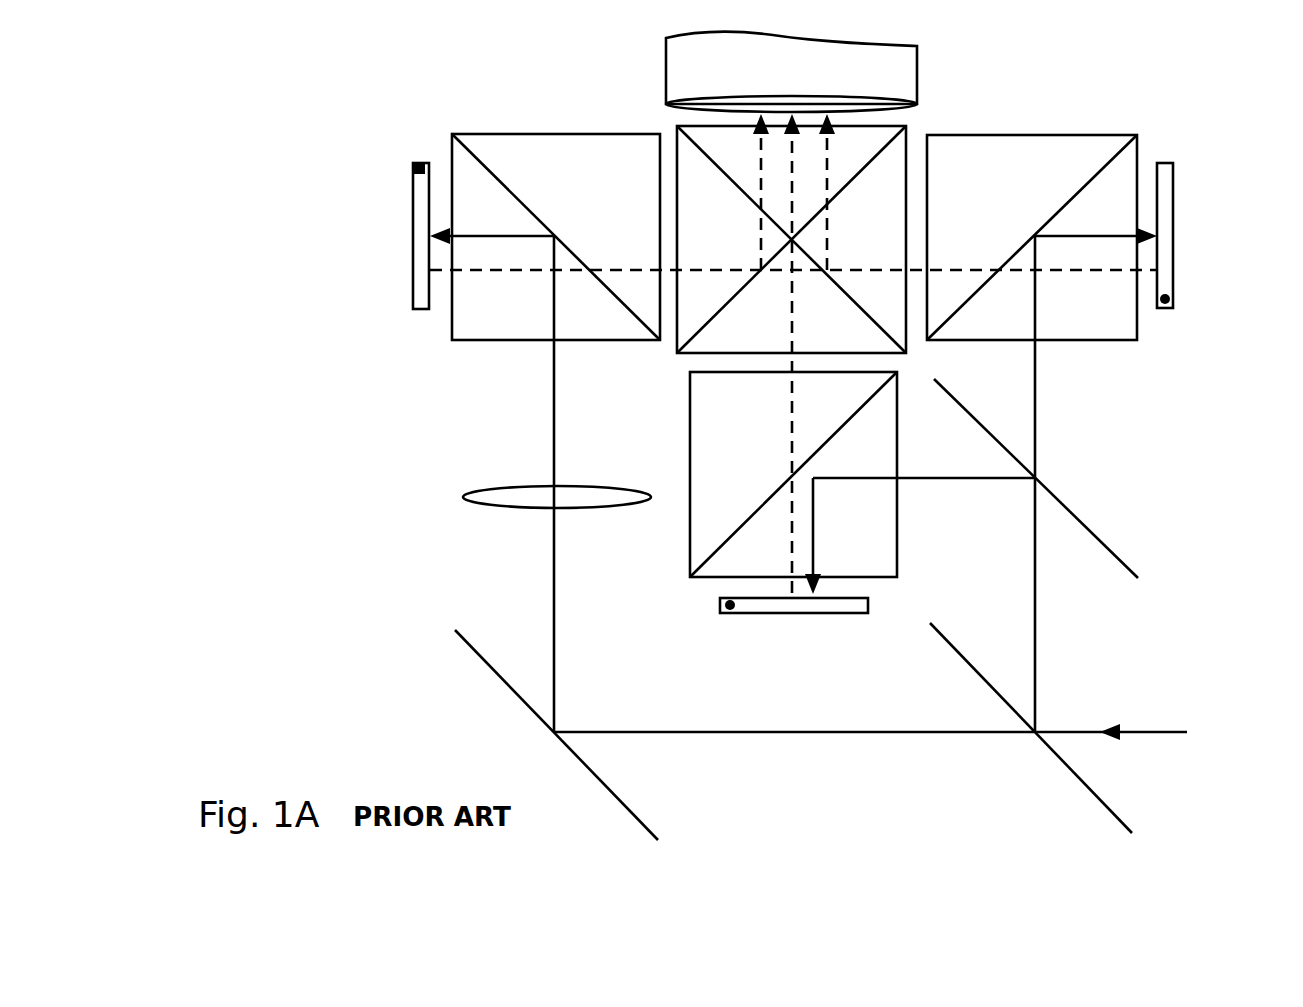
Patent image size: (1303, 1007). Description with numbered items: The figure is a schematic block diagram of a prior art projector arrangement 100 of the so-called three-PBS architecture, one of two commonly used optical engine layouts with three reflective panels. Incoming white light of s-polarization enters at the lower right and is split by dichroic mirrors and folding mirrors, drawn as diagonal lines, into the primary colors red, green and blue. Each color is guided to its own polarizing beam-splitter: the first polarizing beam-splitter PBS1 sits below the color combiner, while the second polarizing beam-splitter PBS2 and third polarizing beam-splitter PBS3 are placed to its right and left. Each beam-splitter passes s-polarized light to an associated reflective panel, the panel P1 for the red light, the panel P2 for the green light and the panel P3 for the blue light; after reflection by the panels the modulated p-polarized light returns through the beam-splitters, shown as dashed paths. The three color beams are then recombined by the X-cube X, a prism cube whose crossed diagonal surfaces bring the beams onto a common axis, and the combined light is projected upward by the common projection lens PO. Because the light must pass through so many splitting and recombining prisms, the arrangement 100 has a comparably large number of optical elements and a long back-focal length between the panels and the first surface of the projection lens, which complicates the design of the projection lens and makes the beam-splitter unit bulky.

The prior art projector arrangement 100 is at (468, 87).
The projection lens PO is at (791, 72).
The X-cube X is at (791, 239).
The polarizing beam-splitter PBS1 is at (793, 474).
The polarizing beam-splitter PBS2 is at (1032, 237).
The polarizing beam-splitter PBS3 is at (556, 237).
The reflective panel P1 is at (1162, 302).
The reflective panel P2 is at (727, 608).
The reflective panel P3 is at (425, 162).